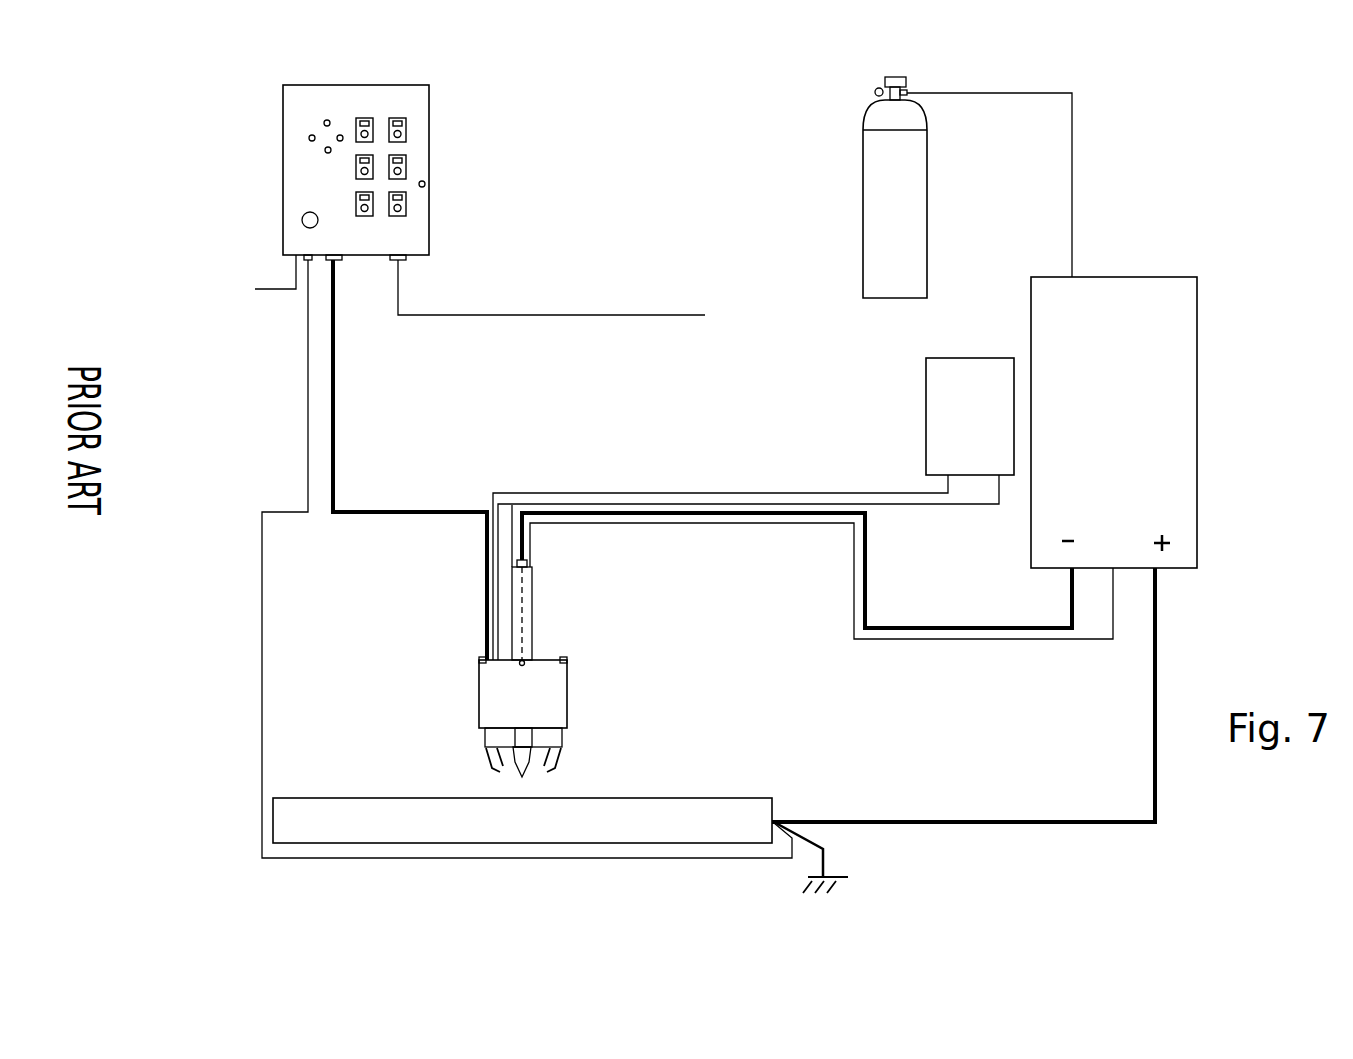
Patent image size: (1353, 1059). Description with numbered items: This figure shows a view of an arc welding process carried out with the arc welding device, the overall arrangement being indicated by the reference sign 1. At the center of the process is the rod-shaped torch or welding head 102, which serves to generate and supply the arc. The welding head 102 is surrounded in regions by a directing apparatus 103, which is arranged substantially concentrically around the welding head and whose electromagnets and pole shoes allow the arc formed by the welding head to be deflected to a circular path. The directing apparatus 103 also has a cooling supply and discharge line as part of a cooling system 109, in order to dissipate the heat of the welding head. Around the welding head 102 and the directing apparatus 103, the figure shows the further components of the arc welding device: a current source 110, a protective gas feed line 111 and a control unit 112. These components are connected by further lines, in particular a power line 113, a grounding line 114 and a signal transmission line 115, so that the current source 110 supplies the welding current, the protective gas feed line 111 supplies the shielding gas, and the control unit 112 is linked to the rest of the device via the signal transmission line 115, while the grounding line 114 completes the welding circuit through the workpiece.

The welding system (prior art) 1 is at (703, 128).
The welding head 102 is at (528, 605).
The directing apparatus 103 is at (550, 702).
The cooling system 109 is at (900, 404).
The current source 110 is at (1176, 432).
The protective gas feed line 111 is at (1072, 203).
The control unit 112 is at (410, 233).
The power line 113 is at (943, 640).
The grounding line 114 is at (260, 623).
The signal transmission line 115 is at (337, 472).